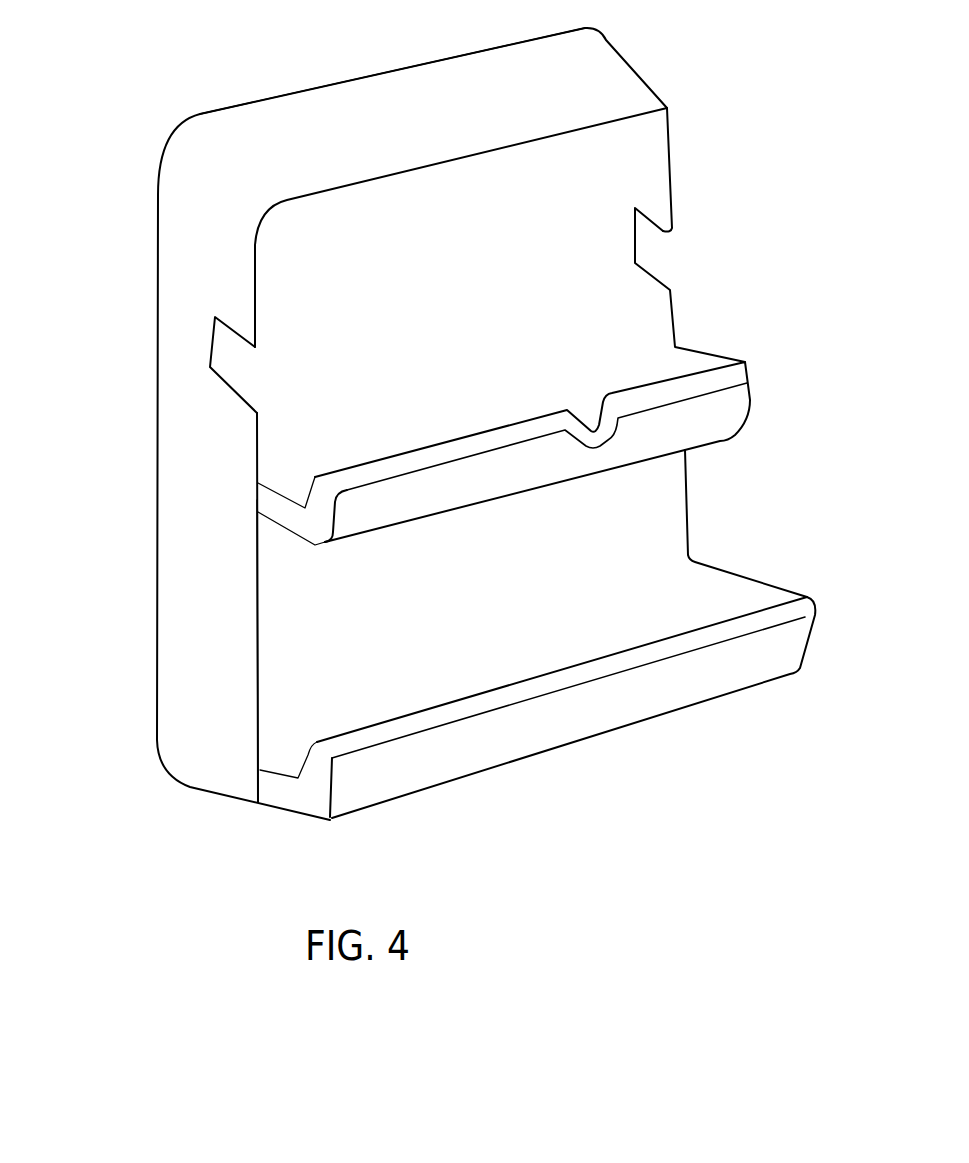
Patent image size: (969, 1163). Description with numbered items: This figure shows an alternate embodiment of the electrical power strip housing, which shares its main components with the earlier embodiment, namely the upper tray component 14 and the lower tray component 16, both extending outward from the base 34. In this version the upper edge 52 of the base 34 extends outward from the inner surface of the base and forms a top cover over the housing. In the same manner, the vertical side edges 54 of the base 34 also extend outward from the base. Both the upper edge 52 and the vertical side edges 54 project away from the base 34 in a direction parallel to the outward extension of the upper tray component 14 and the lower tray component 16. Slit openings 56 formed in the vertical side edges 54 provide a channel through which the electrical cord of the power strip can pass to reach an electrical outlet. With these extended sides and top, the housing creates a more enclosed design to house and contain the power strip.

The base 34 is at (160, 196).
The upper edge 52 is at (313, 152).
The vertical side edges 54 is at (194, 641).
The slit openings 56 is at (222, 340).
The upper tray component 14 is at (733, 410).
The lower tray component 16 is at (675, 685).